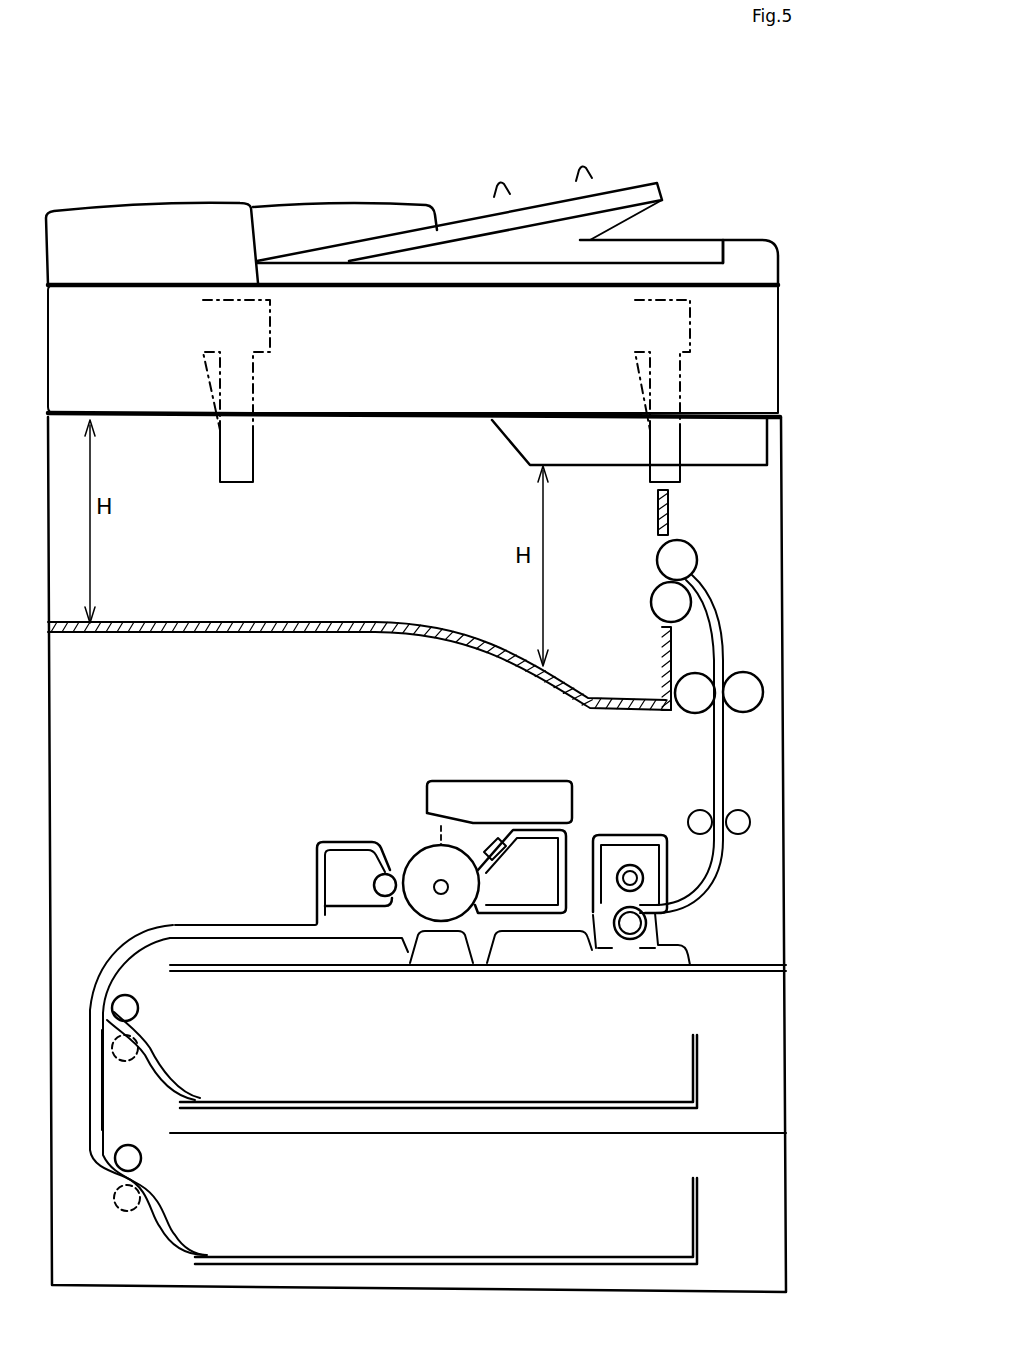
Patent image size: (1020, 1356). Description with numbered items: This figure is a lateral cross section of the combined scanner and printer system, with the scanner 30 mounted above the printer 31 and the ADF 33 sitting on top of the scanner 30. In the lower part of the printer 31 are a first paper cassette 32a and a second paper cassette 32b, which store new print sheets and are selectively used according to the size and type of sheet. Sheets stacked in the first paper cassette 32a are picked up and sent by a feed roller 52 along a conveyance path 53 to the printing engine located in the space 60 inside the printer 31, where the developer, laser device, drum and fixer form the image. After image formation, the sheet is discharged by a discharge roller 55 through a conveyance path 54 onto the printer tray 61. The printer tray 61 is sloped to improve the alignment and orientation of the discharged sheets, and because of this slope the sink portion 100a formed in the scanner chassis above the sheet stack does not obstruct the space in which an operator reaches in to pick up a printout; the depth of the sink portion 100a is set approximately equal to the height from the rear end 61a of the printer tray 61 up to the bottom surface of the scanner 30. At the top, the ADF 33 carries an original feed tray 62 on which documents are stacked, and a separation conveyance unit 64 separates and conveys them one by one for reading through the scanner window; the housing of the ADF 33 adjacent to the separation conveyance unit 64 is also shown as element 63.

The scanner 30 is at (782, 342).
The printer 31 is at (784, 577).
The first paper cassette 32a is at (466, 1100).
The second paper cassette 32b is at (467, 1258).
The ADF 33 is at (760, 242).
The feed roller 52 is at (138, 1018).
The conveyance path 53 is at (173, 923).
The conveyance path 54 is at (716, 733).
The discharge roller 55 is at (684, 556).
The space 60 is at (318, 772).
The printer tray 61 is at (226, 620).
The rear end 61a is at (88, 633).
The original feed tray 62 is at (570, 208).
The document feeder body 63 is at (682, 246).
The separation conveyance unit 64 is at (122, 223).
The sink portion 100a is at (756, 438).